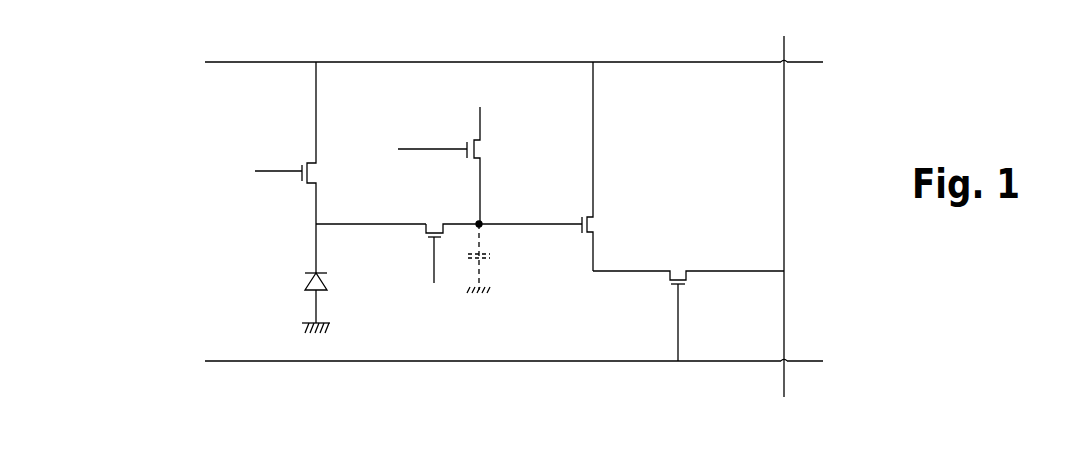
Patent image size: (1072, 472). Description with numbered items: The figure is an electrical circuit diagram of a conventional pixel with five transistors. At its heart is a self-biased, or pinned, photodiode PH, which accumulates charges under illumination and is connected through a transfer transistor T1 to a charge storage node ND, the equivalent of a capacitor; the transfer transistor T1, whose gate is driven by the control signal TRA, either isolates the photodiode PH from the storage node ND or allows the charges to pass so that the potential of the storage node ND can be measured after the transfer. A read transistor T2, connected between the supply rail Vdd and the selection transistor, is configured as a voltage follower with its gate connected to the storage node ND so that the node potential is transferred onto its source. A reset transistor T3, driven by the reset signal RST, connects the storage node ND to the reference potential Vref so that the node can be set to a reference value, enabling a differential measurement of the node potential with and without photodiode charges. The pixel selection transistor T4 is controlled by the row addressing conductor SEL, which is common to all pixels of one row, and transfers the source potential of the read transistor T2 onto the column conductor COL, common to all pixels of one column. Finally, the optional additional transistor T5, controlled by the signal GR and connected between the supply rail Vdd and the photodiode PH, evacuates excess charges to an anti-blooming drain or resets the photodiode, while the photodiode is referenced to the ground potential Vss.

The transfer transistor T1 is at (450, 240).
The read transistor T2 is at (604, 166).
The reset transistor T3 is at (456, 165).
The pixel selection transistor T4 is at (688, 301).
The additional transistor T5 is at (300, 167).
The photodiode PH is at (293, 294).
The charge storage node ND is at (524, 246).
The supply voltage rail Vdd is at (514, 75).
The reference voltage Vref is at (472, 96).
The ground reference Vss is at (335, 325).
The reset signal RST is at (395, 131).
The transfer signal TRA is at (426, 301).
The anti-blooming gate signal GR is at (232, 169).
The row addressing conductor SEL is at (490, 349).
The column conductor COL is at (795, 231).